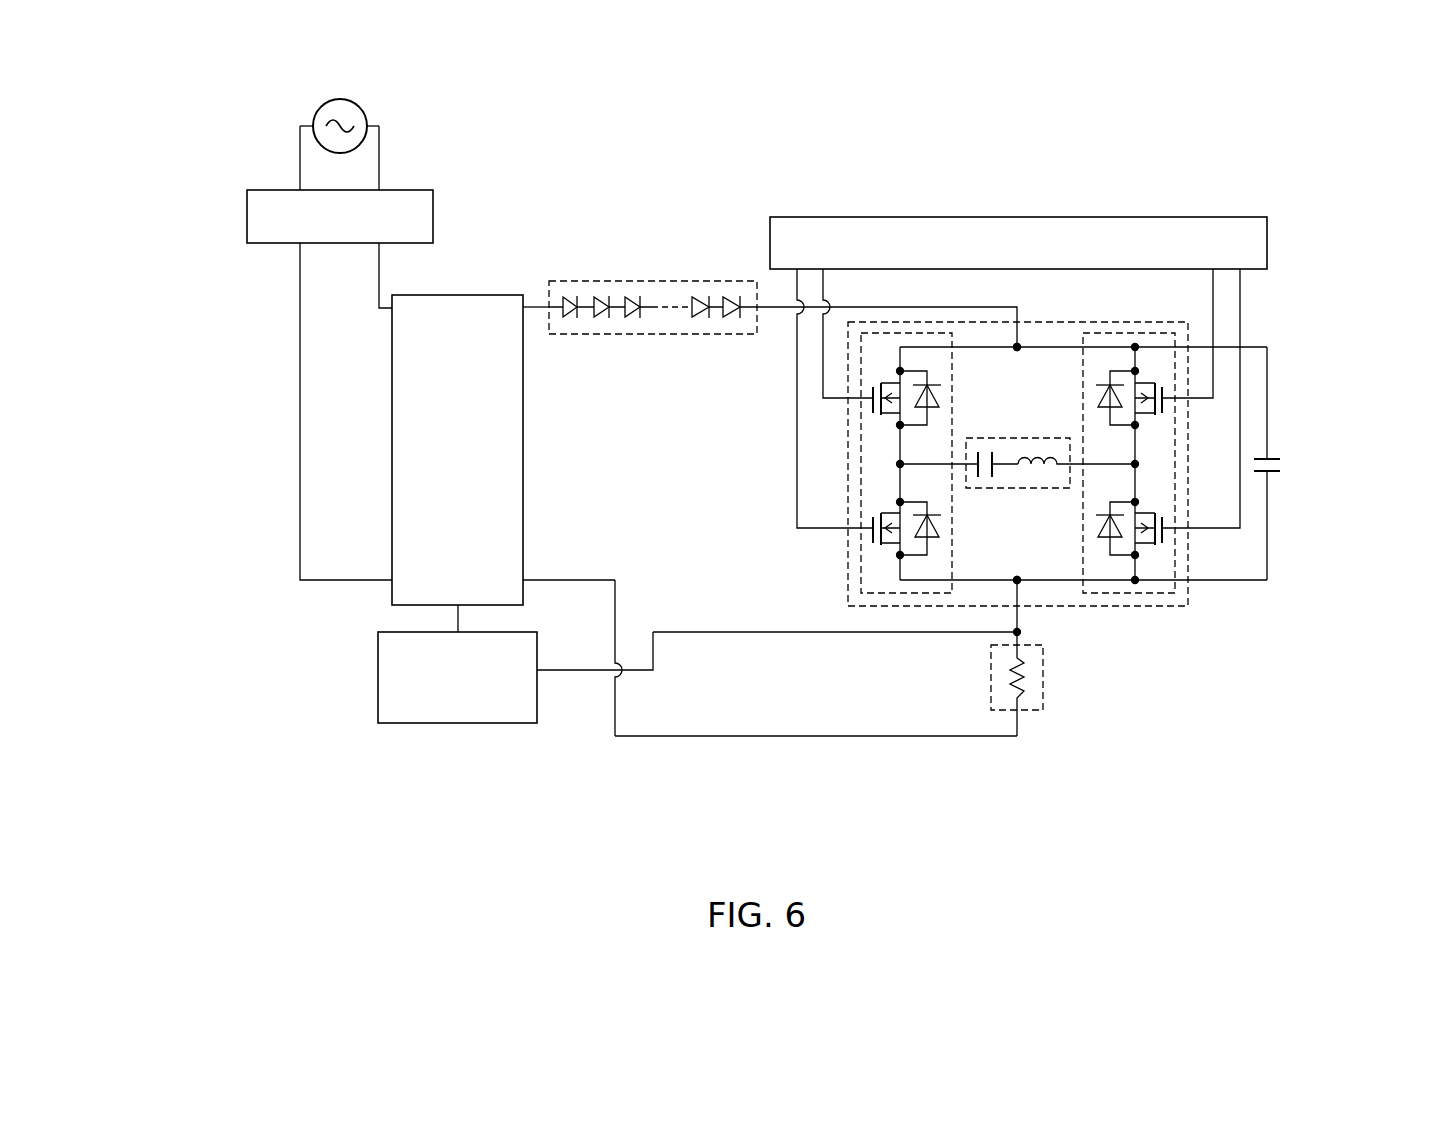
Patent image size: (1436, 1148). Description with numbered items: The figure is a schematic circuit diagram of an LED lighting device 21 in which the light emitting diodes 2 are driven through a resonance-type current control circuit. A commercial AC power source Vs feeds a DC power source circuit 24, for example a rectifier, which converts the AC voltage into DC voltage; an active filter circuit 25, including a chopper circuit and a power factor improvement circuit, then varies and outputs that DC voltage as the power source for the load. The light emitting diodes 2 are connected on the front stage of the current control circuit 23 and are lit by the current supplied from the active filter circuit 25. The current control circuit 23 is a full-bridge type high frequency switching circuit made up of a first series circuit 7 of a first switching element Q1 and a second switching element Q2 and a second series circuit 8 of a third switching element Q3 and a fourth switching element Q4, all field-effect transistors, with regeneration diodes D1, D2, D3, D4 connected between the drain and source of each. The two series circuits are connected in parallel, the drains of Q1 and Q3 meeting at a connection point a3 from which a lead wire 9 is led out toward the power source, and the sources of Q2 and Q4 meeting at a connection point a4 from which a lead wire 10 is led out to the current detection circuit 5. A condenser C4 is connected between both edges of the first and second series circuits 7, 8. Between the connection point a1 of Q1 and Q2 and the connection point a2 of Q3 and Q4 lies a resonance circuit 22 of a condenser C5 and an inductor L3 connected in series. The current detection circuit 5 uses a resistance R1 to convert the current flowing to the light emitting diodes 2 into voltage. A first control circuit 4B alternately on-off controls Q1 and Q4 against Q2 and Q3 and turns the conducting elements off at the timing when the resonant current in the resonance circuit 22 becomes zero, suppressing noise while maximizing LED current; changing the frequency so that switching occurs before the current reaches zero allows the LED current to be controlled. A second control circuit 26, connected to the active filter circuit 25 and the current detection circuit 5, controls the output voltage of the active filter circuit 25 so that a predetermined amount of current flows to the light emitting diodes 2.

The commercial AC power source Vs is at (323, 104).
The DC power source circuit 24 is at (406, 190).
The active filter circuit 25 is at (462, 295).
The light emitting diodes 2 is at (661, 281).
The first control circuit 4B is at (1011, 217).
The LED lighting device 21 is at (1102, 132).
The first series circuit 7 is at (866, 333).
The lead wire 9 is at (917, 307).
The connection point a3 is at (1018, 345).
The second series circuit 8 is at (1152, 333).
The first switching element Q1 is at (893, 414).
The second switching element Q2 is at (893, 544).
The third switching element Q3 is at (1143, 414).
The fourth switching element Q4 is at (1143, 544).
The diode D1 is at (937, 402).
The diode D2 is at (937, 532).
The diode D3 is at (1100, 402).
The diode D4 is at (1100, 532).
The condenser C5 is at (994, 455).
The inductor L3 is at (1041, 455).
The resonance circuit 22 is at (1018, 463).
The condenser C4 is at (1274, 472).
The connection point a1 is at (898, 466).
The connection point a2 is at (1137, 466).
The current control circuit 23 is at (1188, 600).
The connection point a4 is at (1019, 583).
The lead wire 10 is at (1019, 613).
The resistance R1 is at (1010, 669).
The current detection circuit 5 is at (1012, 684).
The second control circuit 26 is at (389, 724).